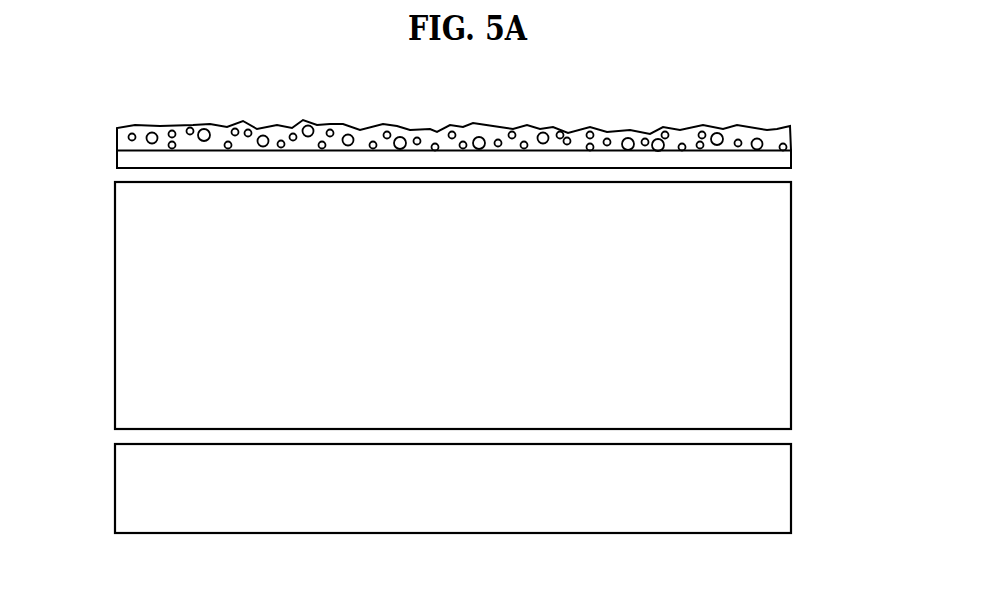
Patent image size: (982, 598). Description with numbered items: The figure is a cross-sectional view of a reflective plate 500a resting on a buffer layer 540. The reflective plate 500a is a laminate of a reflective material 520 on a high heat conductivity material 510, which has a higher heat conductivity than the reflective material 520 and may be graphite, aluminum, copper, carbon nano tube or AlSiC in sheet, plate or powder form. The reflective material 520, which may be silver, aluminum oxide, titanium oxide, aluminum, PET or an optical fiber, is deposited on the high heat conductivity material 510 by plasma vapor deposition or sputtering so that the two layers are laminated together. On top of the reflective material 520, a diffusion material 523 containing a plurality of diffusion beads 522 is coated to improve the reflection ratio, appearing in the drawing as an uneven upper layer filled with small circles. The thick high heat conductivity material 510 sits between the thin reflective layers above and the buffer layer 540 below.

The reflective plate 500a is at (100, 169).
The high heat conductivity material 510 is at (777, 318).
The reflective material 520 is at (772, 163).
The diffusion beads 522 is at (762, 143).
The diffusion material 523 is at (733, 130).
The buffer layer 540 is at (777, 488).